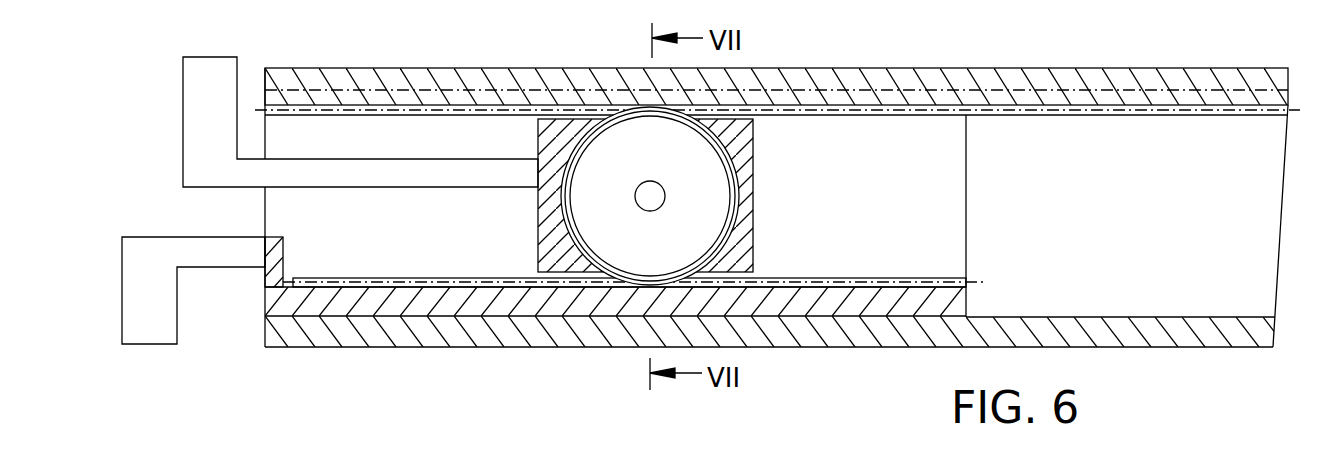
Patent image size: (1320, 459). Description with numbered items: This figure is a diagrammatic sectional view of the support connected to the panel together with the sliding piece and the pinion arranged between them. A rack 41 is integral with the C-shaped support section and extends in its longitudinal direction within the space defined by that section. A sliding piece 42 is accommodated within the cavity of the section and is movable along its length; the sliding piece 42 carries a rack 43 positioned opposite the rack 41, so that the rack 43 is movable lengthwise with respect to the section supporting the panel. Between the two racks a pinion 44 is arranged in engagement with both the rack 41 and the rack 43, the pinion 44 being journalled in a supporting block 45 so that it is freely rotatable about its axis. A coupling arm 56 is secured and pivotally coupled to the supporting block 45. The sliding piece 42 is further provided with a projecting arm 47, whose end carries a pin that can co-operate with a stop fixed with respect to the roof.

The rack 41 is at (1030, 110).
The sliding piece 42 is at (955, 303).
The rack 43 is at (947, 273).
The pinion 44 is at (733, 222).
The supporting block 45 is at (755, 164).
The projecting arm 47 is at (177, 344).
The coupling arm 56 is at (183, 137).